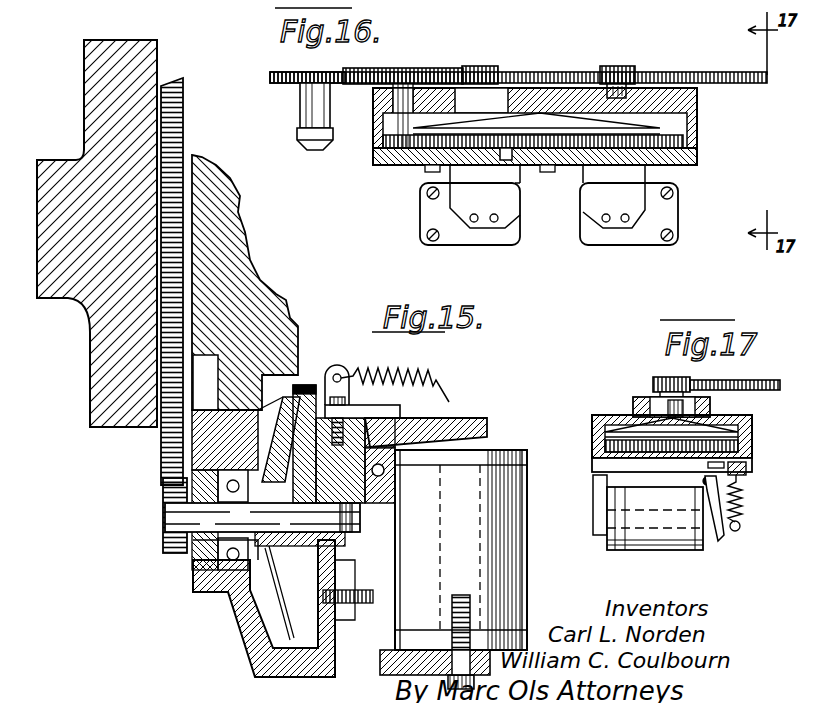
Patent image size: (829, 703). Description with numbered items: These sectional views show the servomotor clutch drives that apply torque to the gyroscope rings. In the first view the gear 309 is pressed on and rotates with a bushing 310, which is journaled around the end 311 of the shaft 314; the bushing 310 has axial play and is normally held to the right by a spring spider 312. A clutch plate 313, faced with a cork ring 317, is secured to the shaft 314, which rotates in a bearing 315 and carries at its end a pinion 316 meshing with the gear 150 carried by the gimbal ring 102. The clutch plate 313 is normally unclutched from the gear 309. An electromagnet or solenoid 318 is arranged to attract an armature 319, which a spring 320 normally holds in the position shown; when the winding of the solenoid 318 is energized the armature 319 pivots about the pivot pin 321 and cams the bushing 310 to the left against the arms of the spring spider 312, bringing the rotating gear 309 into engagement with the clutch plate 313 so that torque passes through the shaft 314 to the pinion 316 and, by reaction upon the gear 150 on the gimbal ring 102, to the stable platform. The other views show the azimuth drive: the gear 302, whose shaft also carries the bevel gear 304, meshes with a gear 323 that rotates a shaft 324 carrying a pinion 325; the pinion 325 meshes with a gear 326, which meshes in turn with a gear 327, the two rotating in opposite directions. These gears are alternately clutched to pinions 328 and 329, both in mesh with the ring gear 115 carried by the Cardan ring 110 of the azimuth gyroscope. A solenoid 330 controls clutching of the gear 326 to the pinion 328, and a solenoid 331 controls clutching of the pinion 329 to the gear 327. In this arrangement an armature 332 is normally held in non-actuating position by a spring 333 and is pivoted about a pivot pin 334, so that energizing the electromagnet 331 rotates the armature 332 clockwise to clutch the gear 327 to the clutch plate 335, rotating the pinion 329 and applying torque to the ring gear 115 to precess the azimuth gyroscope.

In FIG. 15, the gimbal ring 102 is at (90, 404).
In FIG. 15, the gear 150 is at (184, 146).
In FIG. 15, the Cardan ring 110 is at (281, 300).
In FIG. 15, the clutch plate 313 is at (286, 398).
In FIG. 15, the gear 309 is at (305, 384).
In FIG. 15, the spring 320 is at (400, 374).
In FIG. 15, the armature 319 is at (470, 418).
In FIG. 15, the pivot pin 321 is at (383, 470).
In FIG. 15, the bushing 310 is at (386, 494).
In FIG. 15, the electromagnet or solenoid 318 is at (508, 606).
In FIG. 15, the end of shaft 311 is at (262, 517).
In FIG. 15, the pinion 316 is at (162, 516).
In FIG. 15, the shaft 314 is at (190, 558).
In FIG. 15, the bearing 315 is at (192, 574).
In FIG. 15, the spring spider 312 is at (228, 608).
In FIG. 15, the cork ring 317 is at (253, 630).
In FIG. 16, the gear 302 is at (288, 75).
In FIG. 16, the gear 323 is at (421, 70).
In FIG. 16, the pinion 328 is at (486, 66).
In FIG. 16, the pinion 329 is at (626, 68).
In FIG. 17, the pinion 329 is at (652, 385).
In FIG. 16, the ring gear 115 is at (735, 72).
In FIG. 17, the ring gear 115 is at (741, 390).
In FIG. 16, the shaft 324 is at (402, 108).
In FIG. 16, the bevel gear 304 is at (306, 150).
In FIG. 16, the pinion 325 is at (393, 152).
In FIG. 16, the gear 327 is at (697, 143).
In FIG. 17, the gear 327 is at (592, 454).
In FIG. 16, the gear 326 is at (518, 150).
In FIG. 16, the solenoid 330 is at (508, 242).
In FIG. 16, the solenoid 331 is at (652, 238).
In FIG. 17, the solenoid 331 is at (630, 546).
In FIG. 17, the clutch plate 335 is at (752, 430).
In FIG. 17, the pivot pin 334 is at (704, 483).
In FIG. 17, the spring 333 is at (737, 497).
In FIG. 17, the armature 332 is at (722, 542).